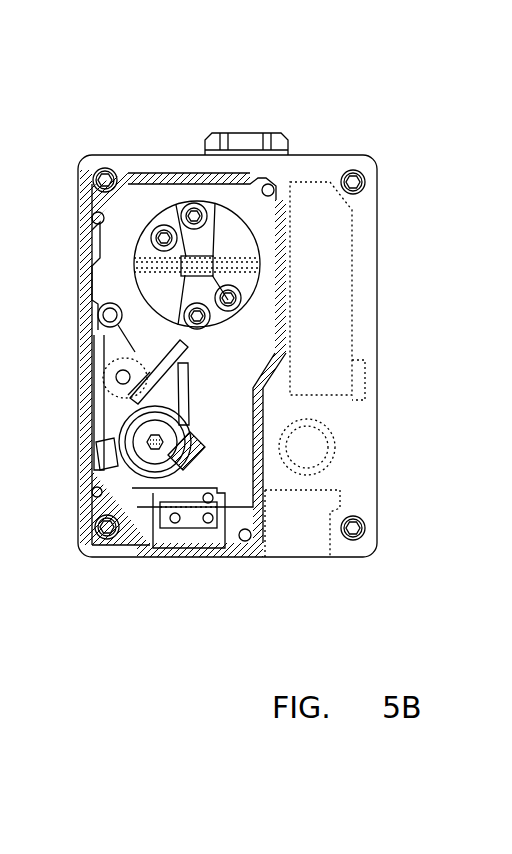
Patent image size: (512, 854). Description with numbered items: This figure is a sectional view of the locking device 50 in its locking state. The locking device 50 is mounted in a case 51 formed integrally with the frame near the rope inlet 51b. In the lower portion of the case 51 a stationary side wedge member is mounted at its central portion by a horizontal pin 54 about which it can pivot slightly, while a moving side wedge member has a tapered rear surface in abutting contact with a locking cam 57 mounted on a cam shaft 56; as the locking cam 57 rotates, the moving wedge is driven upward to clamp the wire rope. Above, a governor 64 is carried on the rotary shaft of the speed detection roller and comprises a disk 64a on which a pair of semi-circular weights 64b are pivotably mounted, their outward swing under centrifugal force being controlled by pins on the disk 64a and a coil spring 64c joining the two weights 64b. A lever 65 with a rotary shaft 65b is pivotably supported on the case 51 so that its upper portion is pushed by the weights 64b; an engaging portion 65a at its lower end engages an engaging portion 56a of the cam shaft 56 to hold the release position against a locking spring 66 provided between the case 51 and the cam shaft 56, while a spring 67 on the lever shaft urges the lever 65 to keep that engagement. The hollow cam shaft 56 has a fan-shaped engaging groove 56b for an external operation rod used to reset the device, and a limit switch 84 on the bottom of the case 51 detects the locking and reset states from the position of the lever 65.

The locking device 50 is at (404, 149).
The case 51 is at (312, 158).
The rope inlet 51b is at (248, 136).
The horizontal pin 54 is at (318, 455).
The cam shaft 56 is at (200, 398).
The engaging portion of the cam shaft 56a is at (147, 510).
The engaging groove 56b is at (195, 424).
The locking cam 57 is at (82, 540).
The governor 64 is at (148, 198).
The disk 64a is at (174, 205).
The semi-circular weights 64b is at (135, 283).
The coil spring 64c is at (240, 258).
The lever 65 is at (108, 330).
The engaging portion of the lever 65a is at (92, 450).
The rotary shaft of the lever 65b is at (105, 366).
The locking spring 66 is at (338, 358).
The spring 67 is at (168, 366).
The limit switch 84 is at (214, 530).